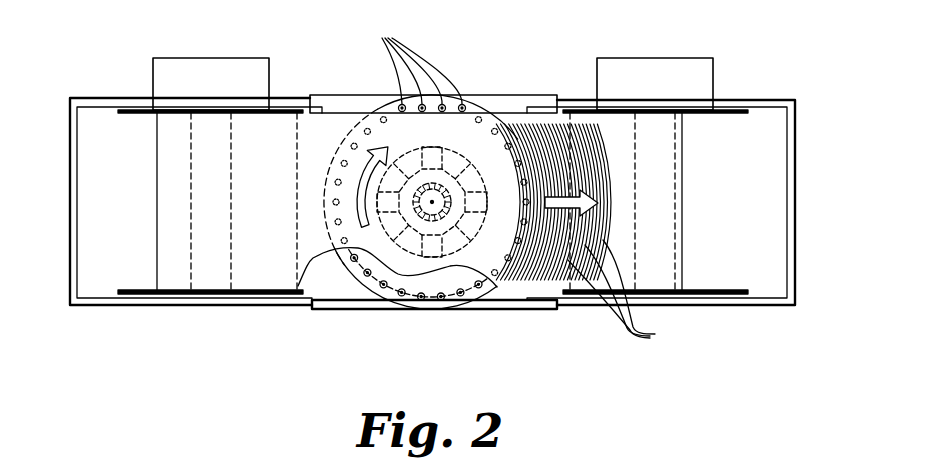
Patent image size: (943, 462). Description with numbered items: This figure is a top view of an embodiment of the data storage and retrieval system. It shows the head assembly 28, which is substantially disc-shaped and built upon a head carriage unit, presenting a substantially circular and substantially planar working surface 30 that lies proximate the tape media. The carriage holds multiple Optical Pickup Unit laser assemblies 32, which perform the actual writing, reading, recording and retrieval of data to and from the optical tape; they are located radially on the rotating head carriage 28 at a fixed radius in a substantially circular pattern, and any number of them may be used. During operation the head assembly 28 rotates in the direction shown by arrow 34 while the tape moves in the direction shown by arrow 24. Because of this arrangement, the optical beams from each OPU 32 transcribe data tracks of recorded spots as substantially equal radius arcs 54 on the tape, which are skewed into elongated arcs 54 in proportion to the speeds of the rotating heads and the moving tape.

The arrow 24 is at (566, 192).
The head assembly 28 is at (438, 311).
The working surface 30 is at (383, 271).
The Optical Pickup Unit laser assemblies 32 is at (419, 64).
The arrow 34 is at (362, 185).
The arcs 54 is at (624, 294).